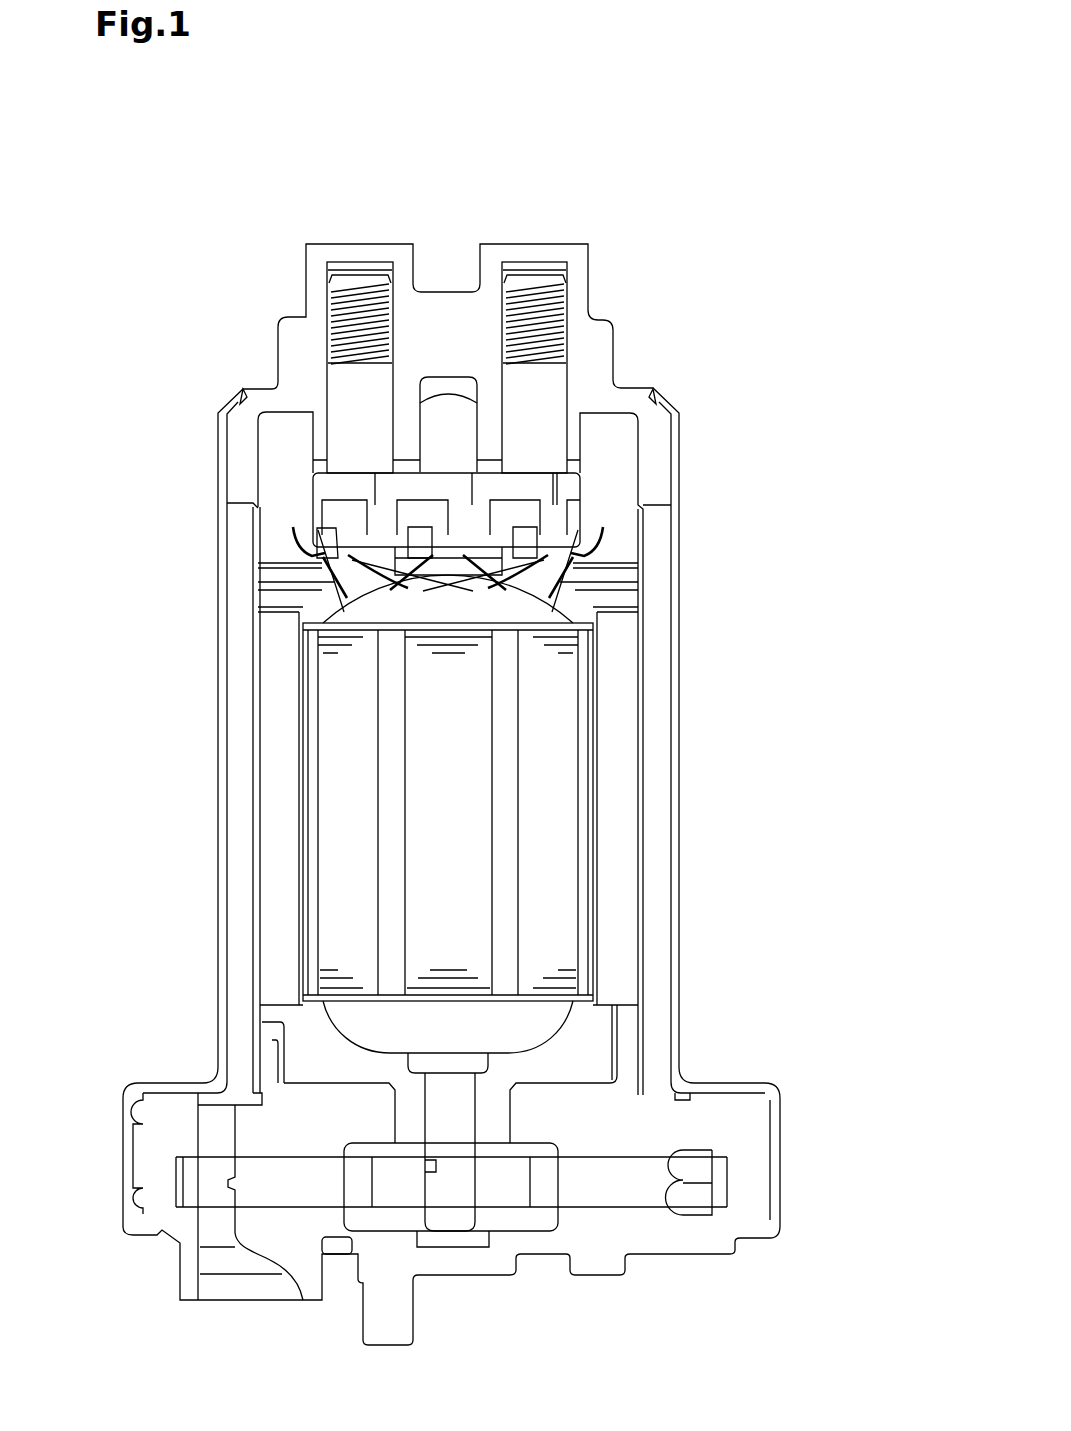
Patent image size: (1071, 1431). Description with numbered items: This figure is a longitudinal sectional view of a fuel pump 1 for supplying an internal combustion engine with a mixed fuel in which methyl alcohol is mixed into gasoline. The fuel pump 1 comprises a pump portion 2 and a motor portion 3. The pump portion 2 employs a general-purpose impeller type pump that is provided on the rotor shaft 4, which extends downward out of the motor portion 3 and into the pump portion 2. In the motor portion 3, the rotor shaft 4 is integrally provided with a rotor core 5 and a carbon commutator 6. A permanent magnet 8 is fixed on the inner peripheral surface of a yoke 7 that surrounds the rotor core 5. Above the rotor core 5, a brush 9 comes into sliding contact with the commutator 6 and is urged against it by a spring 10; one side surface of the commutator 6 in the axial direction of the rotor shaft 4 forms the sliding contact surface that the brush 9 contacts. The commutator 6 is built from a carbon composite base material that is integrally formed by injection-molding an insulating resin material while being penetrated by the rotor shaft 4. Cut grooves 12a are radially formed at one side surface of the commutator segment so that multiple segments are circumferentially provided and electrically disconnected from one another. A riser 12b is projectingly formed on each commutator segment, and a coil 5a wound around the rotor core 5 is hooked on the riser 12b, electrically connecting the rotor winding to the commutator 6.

The fuel pump 1 is at (795, 472).
The pump portion 2 is at (155, 1063).
The motor portion 3 is at (443, 746).
The rotor shaft 4 is at (458, 1123).
The rotor core 5 is at (443, 791).
The coil 5a is at (323, 583).
The commutator 6 is at (434, 418).
The yoke 7 is at (655, 667).
The permanent magnet 8 is at (622, 847).
The brush 9 is at (517, 296).
The spring 10 is at (538, 295).
The cut grooves 12a is at (558, 490).
The riser 12b is at (290, 537).